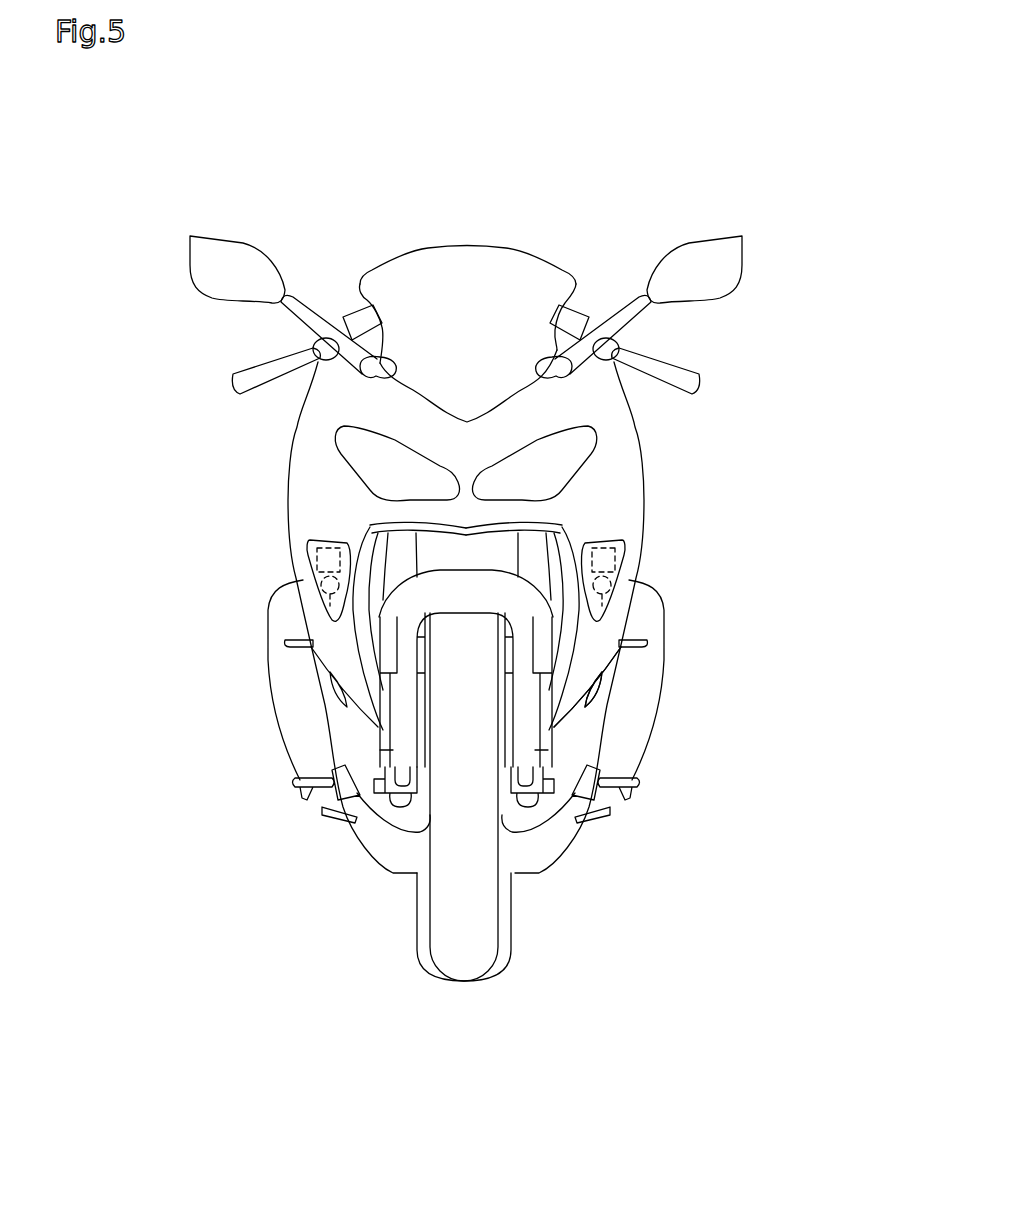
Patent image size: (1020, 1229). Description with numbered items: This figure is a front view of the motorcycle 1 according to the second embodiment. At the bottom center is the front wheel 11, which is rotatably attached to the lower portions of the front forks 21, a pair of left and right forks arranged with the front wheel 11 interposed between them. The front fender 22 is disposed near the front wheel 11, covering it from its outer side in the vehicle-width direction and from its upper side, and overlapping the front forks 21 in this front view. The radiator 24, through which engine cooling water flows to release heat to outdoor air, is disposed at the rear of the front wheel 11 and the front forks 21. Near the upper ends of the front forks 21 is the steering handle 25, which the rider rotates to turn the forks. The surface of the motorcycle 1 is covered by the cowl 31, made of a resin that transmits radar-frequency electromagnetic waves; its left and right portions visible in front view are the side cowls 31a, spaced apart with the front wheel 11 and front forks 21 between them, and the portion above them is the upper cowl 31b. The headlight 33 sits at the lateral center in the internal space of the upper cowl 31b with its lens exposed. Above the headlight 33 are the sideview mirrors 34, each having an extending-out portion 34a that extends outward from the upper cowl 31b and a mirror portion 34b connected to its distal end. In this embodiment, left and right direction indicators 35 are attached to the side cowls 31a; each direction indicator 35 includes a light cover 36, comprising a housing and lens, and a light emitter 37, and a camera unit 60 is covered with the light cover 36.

The motorcycle 1 is at (114, 162).
The front wheel 11 is at (466, 968).
The front forks 21 is at (393, 749).
The front fender 22 is at (420, 591).
The radiator 24 is at (360, 644).
The steering handle 25 is at (663, 373).
The cowl 31 is at (808, 494).
The side cowls 31a is at (637, 561).
The upper cowl 31b is at (627, 472).
The headlight 33 is at (370, 472).
The sideview mirrors 34 is at (610, 146).
The extending-out portion 34a is at (630, 307).
The mirror portion 34b is at (697, 257).
The direction indicators 35 is at (633, 595).
The light cover 36 is at (597, 620).
The light emitter 37 is at (620, 623).
The camera unit 60 is at (627, 563).